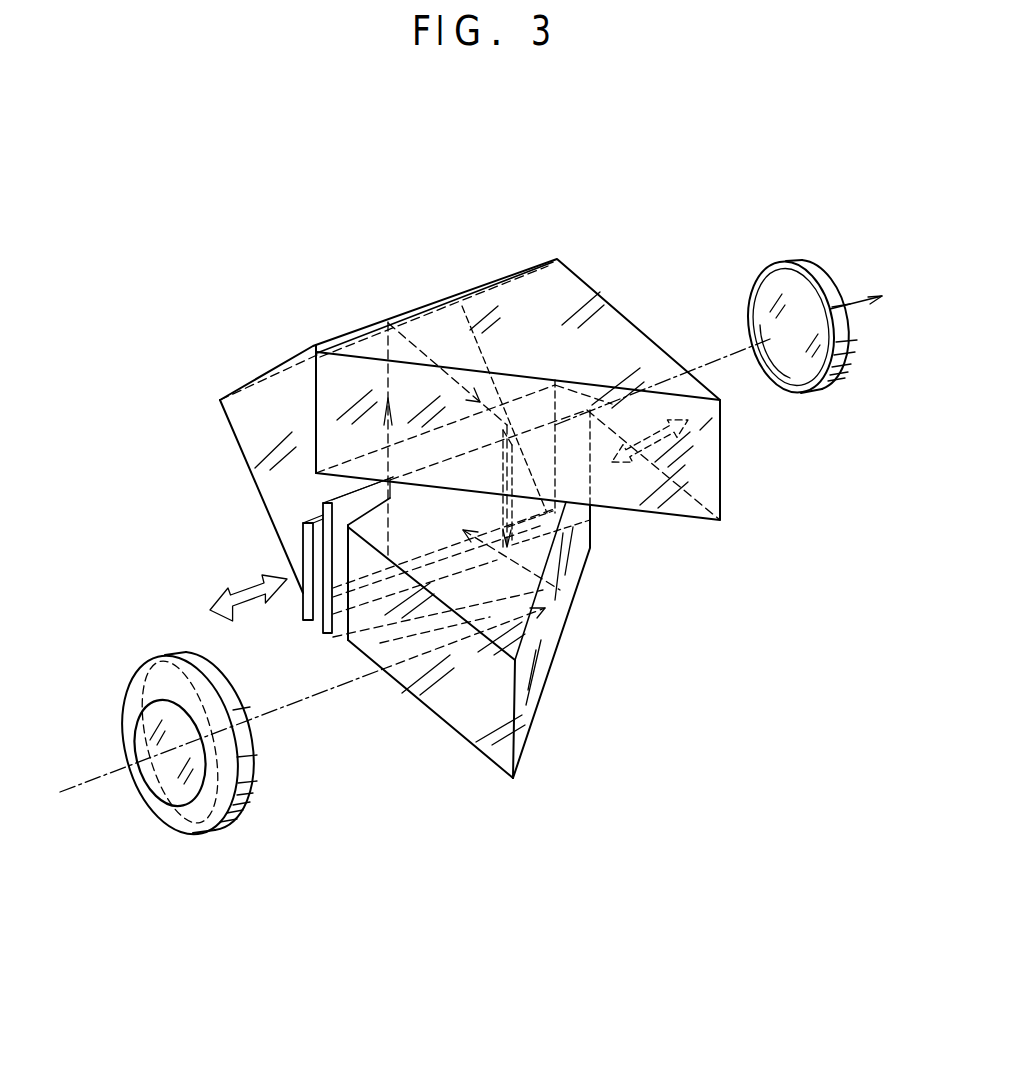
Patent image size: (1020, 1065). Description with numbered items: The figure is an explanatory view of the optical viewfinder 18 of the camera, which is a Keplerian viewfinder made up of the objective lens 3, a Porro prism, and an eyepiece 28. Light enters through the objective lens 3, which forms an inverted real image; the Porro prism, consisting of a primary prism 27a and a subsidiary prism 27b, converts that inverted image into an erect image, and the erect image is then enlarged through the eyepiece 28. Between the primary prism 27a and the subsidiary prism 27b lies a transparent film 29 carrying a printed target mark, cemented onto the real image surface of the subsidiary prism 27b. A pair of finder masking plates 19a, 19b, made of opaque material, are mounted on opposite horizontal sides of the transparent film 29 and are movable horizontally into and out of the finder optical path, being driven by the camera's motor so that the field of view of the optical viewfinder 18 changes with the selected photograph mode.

The objective lens 3 is at (203, 838).
The optical viewfinder 18 is at (497, 188).
The finder masking plate 19a is at (303, 543).
The finder masking plate 19b is at (590, 545).
The primary prism 27a is at (265, 372).
The subsidiary prism 27b is at (540, 697).
The eyepiece 28 is at (792, 260).
The transparent film 29 is at (324, 633).